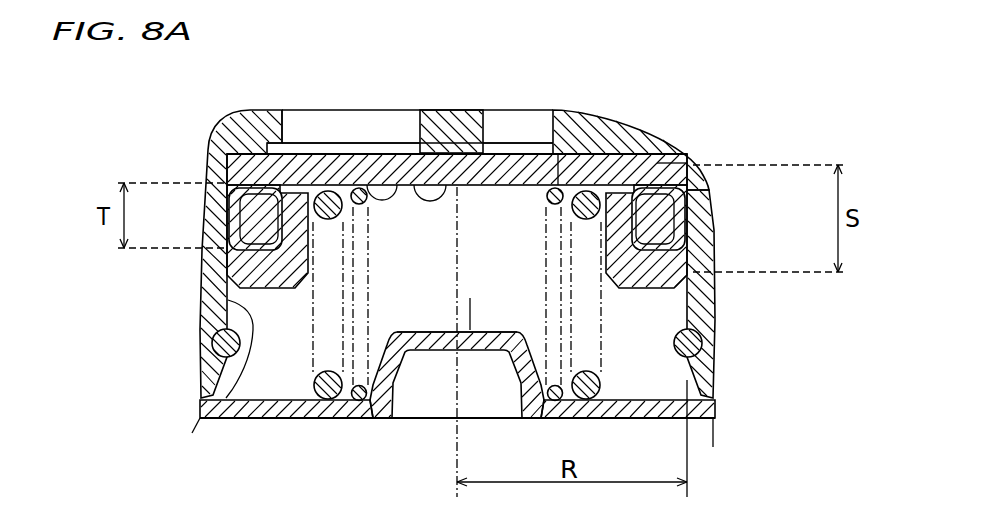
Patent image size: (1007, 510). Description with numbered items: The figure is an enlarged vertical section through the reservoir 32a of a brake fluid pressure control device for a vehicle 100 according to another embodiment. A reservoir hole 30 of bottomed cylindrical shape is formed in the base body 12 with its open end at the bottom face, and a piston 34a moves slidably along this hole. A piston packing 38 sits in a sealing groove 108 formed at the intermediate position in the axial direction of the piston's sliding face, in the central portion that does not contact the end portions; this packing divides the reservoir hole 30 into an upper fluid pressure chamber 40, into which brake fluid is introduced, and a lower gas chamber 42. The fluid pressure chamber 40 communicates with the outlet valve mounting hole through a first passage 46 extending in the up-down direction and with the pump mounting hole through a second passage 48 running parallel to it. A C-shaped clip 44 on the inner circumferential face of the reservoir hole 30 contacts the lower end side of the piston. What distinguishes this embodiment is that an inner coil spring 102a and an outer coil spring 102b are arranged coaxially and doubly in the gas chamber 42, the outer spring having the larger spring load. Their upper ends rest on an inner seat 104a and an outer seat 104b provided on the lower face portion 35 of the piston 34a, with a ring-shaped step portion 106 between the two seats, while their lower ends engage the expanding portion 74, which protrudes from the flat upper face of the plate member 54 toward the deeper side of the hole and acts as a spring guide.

The brake fluid pressure control device for a vehicle 100 is at (688, 112).
The base body 12 is at (706, 310).
The inner coil spring 102a is at (562, 150).
The outer coil spring 102b is at (690, 193).
The inner seat 104a is at (393, 187).
The outer seat 104b is at (313, 197).
The fluid pressure chamber 40 is at (512, 146).
The second passage 48 is at (297, 122).
The first passage 46 is at (497, 127).
The piston 34a is at (533, 150).
The lower face portion 35 is at (417, 187).
The piston packing 38 is at (252, 213).
The sealing groove 108 is at (678, 233).
The C-shaped clip 44 is at (222, 344).
The ring-shaped step portion 106 is at (353, 215).
The plate member 54 is at (602, 424).
The gas chamber 42 is at (436, 348).
The reservoir 32a is at (474, 333).
The expanding portion 74 is at (493, 332).
The reservoir hole 30 is at (223, 418).